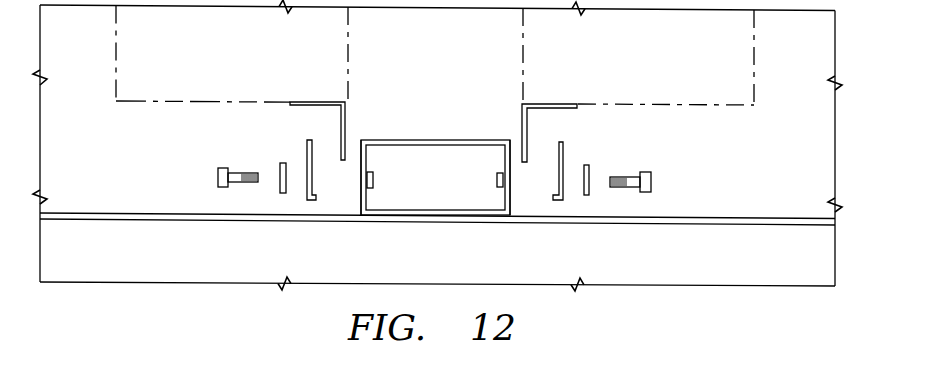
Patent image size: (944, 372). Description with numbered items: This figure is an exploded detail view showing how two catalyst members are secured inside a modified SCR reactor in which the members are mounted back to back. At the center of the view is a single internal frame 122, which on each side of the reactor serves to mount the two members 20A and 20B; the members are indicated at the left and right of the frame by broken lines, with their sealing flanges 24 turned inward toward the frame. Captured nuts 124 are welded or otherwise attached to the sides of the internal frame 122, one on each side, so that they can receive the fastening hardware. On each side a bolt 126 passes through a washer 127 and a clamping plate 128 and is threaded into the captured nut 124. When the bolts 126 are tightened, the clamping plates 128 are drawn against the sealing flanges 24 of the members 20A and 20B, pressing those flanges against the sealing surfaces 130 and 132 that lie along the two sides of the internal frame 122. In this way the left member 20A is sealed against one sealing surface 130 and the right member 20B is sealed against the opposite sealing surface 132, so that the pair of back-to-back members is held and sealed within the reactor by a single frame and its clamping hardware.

The member 20A is at (125, 106).
The member 20B is at (754, 106).
The sealing flange 24 is at (306, 100).
The internal frame 122 is at (436, 140).
The captured nut 124 is at (374, 178).
The bolt 126 is at (218, 177).
The washer 127 is at (283, 194).
The clamping plate 128 is at (305, 146).
The sealing surface 130 is at (356, 148).
The sealing surface 132 is at (512, 148).